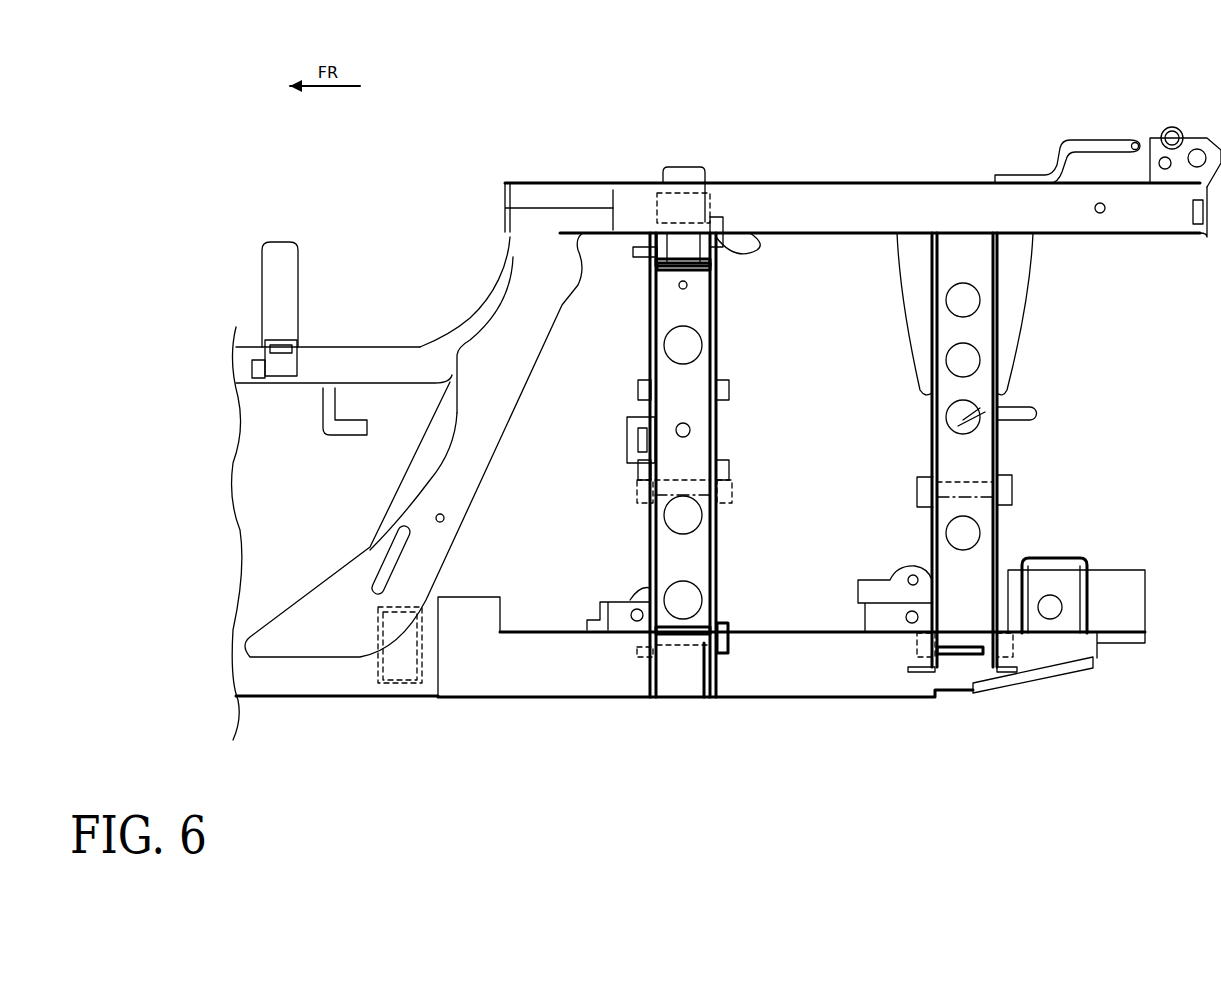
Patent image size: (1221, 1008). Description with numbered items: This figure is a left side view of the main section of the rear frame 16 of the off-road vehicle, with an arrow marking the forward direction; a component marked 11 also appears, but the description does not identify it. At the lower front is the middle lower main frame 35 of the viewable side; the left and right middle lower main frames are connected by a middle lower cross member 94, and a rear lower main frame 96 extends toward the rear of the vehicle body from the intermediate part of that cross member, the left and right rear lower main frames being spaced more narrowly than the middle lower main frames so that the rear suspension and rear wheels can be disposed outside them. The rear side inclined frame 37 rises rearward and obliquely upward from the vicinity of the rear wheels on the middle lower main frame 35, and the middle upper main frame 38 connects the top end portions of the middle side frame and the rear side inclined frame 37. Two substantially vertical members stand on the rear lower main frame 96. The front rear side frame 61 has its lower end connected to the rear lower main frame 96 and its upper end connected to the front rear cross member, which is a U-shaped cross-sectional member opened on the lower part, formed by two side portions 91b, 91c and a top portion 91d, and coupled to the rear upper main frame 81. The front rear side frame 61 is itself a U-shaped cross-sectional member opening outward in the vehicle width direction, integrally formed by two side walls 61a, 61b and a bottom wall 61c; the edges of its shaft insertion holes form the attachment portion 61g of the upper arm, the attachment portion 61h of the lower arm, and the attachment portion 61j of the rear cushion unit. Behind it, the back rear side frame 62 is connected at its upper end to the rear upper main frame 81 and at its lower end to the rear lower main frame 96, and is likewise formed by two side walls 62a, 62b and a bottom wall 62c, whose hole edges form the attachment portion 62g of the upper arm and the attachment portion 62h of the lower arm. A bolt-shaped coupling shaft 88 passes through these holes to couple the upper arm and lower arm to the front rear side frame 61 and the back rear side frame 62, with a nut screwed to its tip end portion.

The vehicle body 11 is at (298, 198).
The rear frame 16 is at (408, 243).
The middle lower main frame 35 is at (300, 692).
The rear side inclined frame 37 is at (355, 580).
The middle upper main frame 38 is at (385, 357).
The front rear side frame 61 is at (641, 298).
The side wall 61a is at (652, 588).
The side wall 61b is at (717, 585).
The bottom wall 61c is at (690, 572).
The attachment portion 61g is at (628, 504).
The attachment portion 61h is at (641, 668).
The attachment portion 61j is at (641, 205).
The back rear side frame 62 is at (995, 300).
The side wall 62a is at (930, 598).
The side wall 62b is at (1030, 597).
The bottom wall 62c is at (977, 607).
The attachment portion 62g is at (915, 511).
The attachment portion 62h is at (915, 672).
The rear upper main frame 81 is at (848, 185).
The coupling shaft 88 is at (670, 470).
The side portion 91b is at (660, 178).
The side portion 91c is at (731, 167).
The top portion 91d is at (687, 163).
The middle lower cross member 94 is at (362, 690).
The rear lower main frame 96 is at (533, 690).